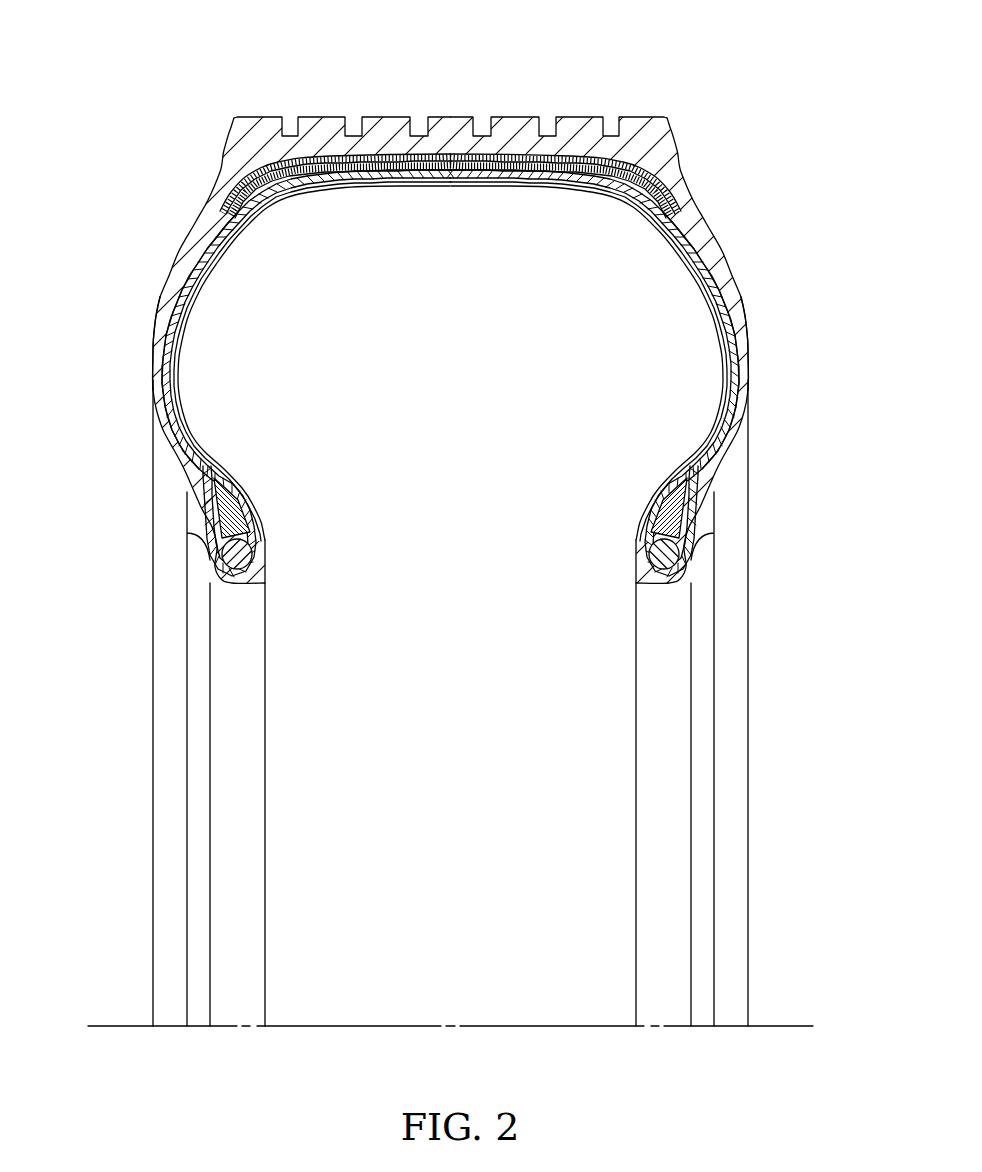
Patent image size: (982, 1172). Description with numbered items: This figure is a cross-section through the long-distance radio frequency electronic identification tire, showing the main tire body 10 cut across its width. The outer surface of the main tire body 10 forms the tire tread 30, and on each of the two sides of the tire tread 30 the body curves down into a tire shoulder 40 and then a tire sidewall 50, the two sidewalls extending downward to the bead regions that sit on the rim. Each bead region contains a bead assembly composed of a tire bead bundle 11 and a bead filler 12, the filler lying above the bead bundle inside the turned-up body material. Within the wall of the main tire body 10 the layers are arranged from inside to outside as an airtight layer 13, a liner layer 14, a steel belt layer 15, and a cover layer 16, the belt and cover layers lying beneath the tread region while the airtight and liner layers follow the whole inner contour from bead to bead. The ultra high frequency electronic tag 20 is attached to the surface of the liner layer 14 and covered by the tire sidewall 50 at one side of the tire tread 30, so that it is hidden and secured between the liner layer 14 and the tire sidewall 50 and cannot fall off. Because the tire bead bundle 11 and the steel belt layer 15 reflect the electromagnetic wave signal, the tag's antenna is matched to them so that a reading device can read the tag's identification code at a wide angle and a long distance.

The main tire body 10 is at (170, 298).
The tire bead bundle 11 is at (672, 550).
The bead filler 12 is at (680, 512).
The airtight layer 13 is at (190, 420).
The liner layer 14 is at (197, 250).
The steel belt layer 15 is at (400, 158).
The cover layer 16 is at (455, 157).
The ultra high frequency electronic tag 20 is at (156, 367).
The tire tread 30 is at (583, 117).
The tire shoulder 40 is at (680, 160).
The tire sidewall 50 is at (748, 313).